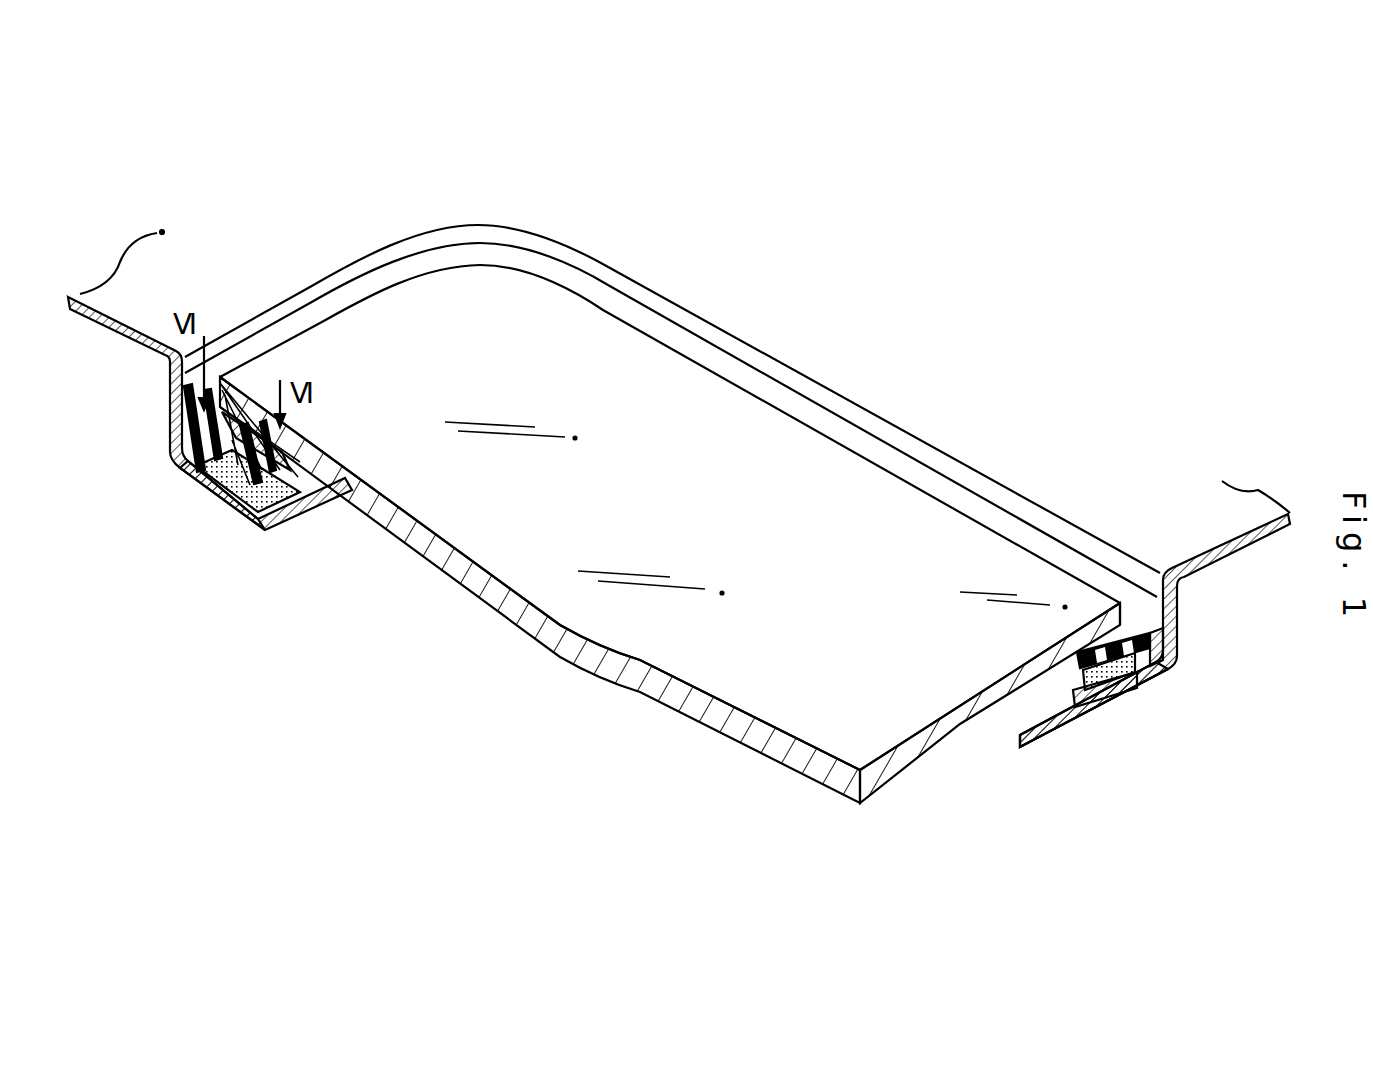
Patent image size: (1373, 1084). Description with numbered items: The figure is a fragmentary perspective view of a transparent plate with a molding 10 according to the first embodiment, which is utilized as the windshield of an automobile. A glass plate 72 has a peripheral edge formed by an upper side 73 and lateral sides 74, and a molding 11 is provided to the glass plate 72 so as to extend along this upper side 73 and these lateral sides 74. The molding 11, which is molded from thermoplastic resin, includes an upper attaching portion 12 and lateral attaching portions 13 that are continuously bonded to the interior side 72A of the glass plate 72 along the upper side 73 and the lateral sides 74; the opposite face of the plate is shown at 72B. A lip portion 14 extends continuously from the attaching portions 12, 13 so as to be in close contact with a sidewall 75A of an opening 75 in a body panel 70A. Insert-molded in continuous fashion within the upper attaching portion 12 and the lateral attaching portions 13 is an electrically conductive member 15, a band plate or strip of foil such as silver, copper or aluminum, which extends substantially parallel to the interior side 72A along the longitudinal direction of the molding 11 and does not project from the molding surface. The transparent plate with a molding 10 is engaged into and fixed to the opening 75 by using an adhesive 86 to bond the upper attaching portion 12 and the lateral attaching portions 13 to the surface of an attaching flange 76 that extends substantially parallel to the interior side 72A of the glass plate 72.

The transparent plate with a molding 10 is at (610, 275).
The molding 11 is at (1163, 667).
The upper attaching portion 12 is at (274, 470).
The lateral attaching portions 13 is at (1103, 683).
The lip portion 14 is at (242, 342).
The electrically conductive member 15 is at (205, 490).
The body panel 70A is at (1150, 507).
The glass plate 72 is at (673, 504).
The interior side 72A is at (547, 647).
The panel layer 72B is at (663, 632).
The upper side 73 is at (357, 334).
The lateral sides 74 is at (718, 393).
The opening 75 is at (1097, 547).
The sidewall 75A is at (170, 421).
The attaching flange 76 is at (1040, 707).
The adhesive 86 is at (224, 507).